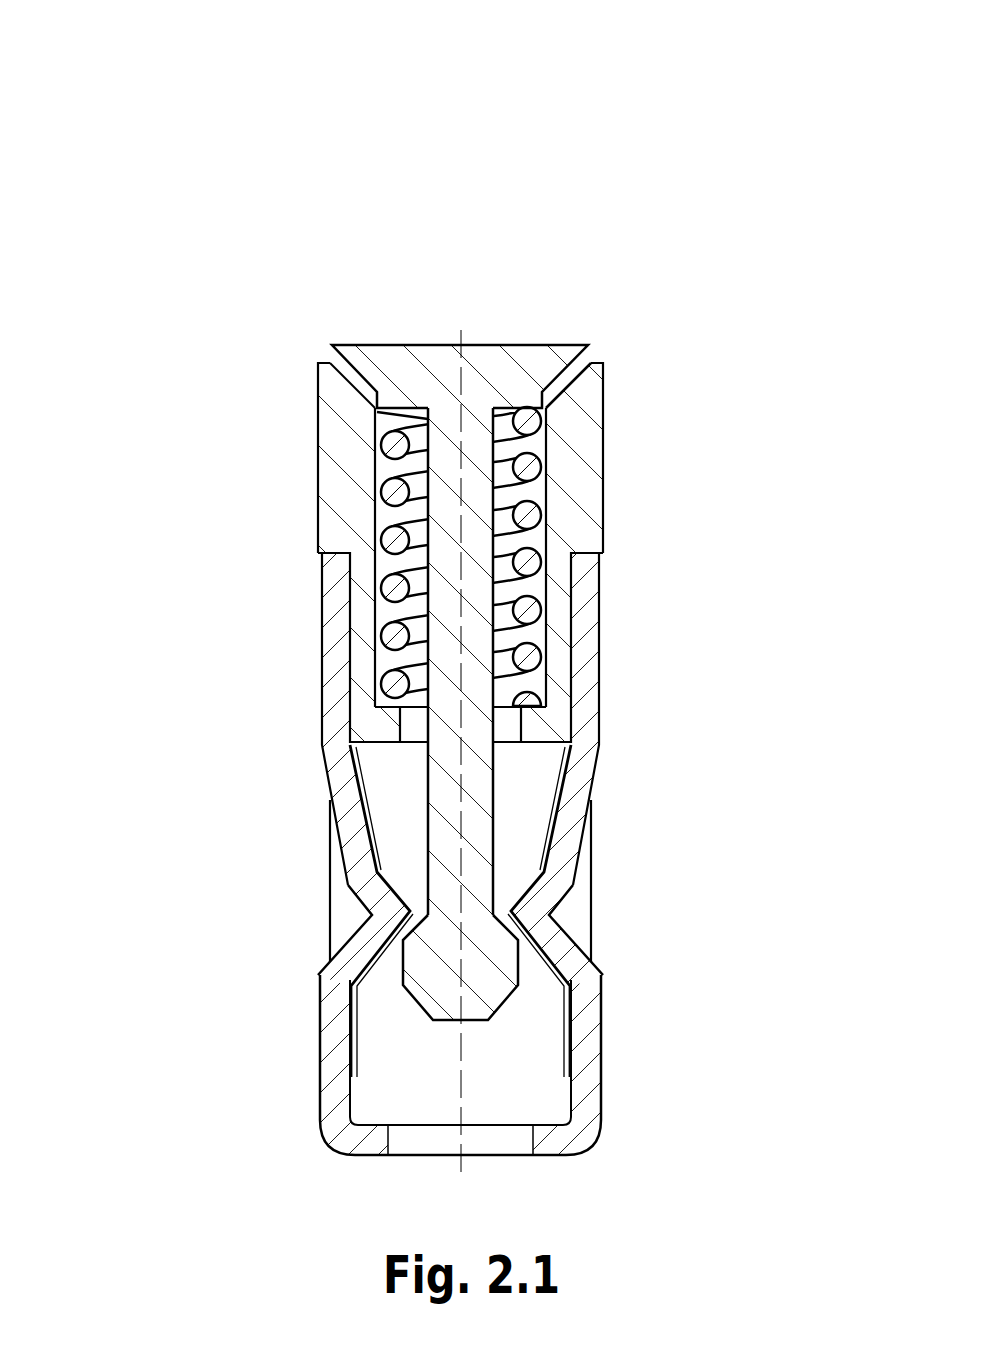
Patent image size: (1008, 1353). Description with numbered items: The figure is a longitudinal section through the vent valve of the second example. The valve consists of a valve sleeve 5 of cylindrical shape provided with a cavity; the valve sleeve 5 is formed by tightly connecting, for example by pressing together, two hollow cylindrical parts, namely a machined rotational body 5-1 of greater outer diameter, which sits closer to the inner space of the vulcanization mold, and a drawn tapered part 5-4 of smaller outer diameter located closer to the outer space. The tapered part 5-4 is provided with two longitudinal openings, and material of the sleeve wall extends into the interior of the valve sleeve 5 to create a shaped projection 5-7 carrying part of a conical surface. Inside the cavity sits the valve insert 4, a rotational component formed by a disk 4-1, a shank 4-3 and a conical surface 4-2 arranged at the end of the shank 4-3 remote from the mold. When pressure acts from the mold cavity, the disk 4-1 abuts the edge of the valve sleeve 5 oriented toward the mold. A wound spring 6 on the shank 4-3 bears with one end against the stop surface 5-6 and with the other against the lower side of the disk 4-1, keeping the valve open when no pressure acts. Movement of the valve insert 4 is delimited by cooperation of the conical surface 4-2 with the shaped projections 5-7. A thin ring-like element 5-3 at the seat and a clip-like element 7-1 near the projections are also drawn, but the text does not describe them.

The valve insert 4 is at (397, 357).
The disk 4-1 is at (500, 363).
The conical surface 4-2 is at (460, 1000).
The shank 4-3 is at (462, 792).
The valve sleeve 5 is at (570, 478).
The machined rotational body 5-1 is at (603, 420).
The seal ring 5-3 is at (567, 383).
The tapered part 5-4 is at (585, 1098).
The stop surface of the spring 5-6 is at (388, 707).
The shaped projection 5-7 is at (520, 913).
The wound spring 6 is at (528, 655).
The retaining clip 7-1 is at (515, 893).